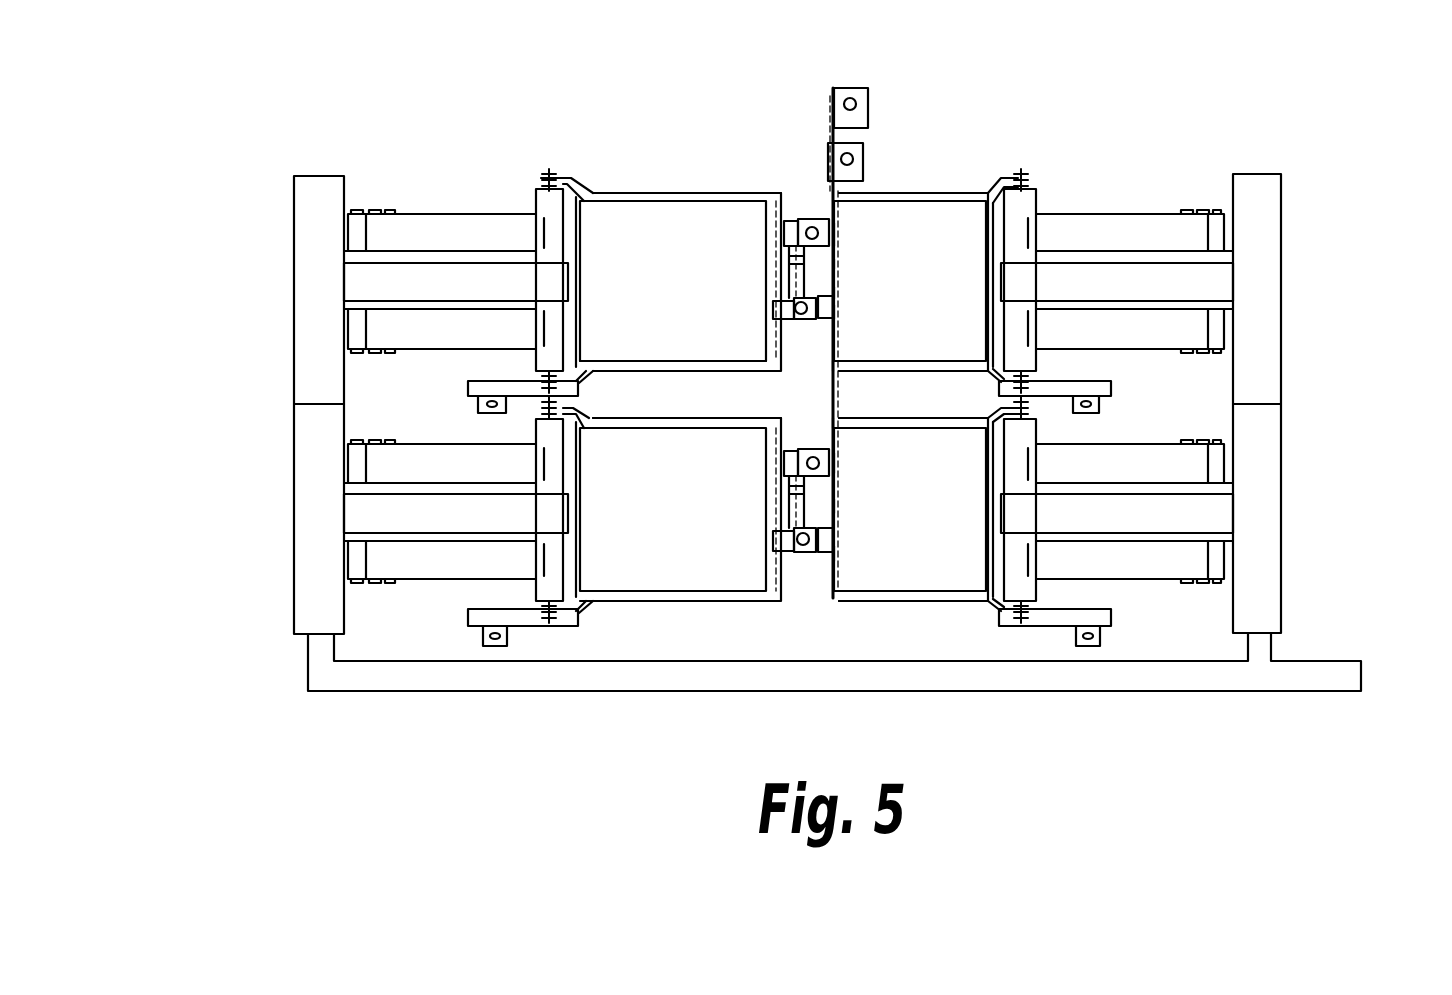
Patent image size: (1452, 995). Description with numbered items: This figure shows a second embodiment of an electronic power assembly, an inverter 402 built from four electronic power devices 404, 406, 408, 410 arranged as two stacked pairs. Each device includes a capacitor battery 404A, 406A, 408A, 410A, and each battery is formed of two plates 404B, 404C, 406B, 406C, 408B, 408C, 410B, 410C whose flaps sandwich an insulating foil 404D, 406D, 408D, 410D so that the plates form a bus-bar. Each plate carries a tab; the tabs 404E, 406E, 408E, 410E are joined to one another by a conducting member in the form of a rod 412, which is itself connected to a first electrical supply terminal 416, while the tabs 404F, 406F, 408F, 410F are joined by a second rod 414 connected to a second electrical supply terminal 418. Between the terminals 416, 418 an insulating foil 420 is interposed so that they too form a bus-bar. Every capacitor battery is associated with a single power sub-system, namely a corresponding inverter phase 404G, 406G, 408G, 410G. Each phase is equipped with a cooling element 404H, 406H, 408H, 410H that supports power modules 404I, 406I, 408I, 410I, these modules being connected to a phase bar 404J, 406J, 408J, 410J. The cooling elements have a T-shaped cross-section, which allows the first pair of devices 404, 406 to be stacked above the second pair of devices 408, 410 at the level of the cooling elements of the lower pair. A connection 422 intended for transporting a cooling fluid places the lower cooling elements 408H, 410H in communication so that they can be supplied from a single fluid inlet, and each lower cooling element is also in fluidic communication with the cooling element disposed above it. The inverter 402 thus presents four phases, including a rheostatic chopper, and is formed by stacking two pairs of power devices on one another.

The inverter 402 is at (950, 98).
The electronic power device 404 is at (620, 142).
The capacitor battery 404A is at (658, 225).
The plate 404B is at (640, 190).
The plate 404C is at (645, 360).
The insulating foil 404D is at (775, 275).
The tab 404E is at (783, 232).
The tab 404F is at (777, 311).
The inverter phase 404G is at (283, 198).
The cooling element 404H is at (330, 287).
The power modules 404I is at (455, 320).
The phase bar 404J is at (472, 380).
The electronic power device 406 is at (1137, 162).
The capacitor battery 406A is at (927, 225).
The plate 406B is at (900, 195).
The plate 406C is at (882, 365).
The insulating foil 406D is at (833, 262).
The tab 406E is at (840, 224).
The tab 406F is at (835, 310).
The inverter phase 406G is at (1300, 238).
The cooling element 406H is at (1268, 288).
The power modules 406I is at (1148, 320).
The phase bar 406J is at (1103, 383).
The electronic power device 408 is at (630, 628).
The capacitor battery 408A is at (673, 567).
The plate 408B is at (655, 420).
The plate 408C is at (717, 600).
The insulating foil 408D is at (775, 504).
The tab 408E is at (788, 462).
The tab 408F is at (778, 540).
The inverter phase 408G is at (283, 508).
The cooling element 408H is at (320, 500).
The power modules 408I is at (437, 555).
The phase bar 408J is at (510, 617).
The electronic power device 410 is at (952, 622).
The capacitor battery 410A is at (945, 580).
The plate 410B is at (893, 422).
The plate 410C is at (898, 600).
The insulating foil 410D is at (840, 505).
The tab 410E is at (840, 462).
The tab 410F is at (838, 553).
The inverter phase 410G is at (1292, 530).
The cooling element 410H is at (1258, 505).
The power modules 410I is at (1135, 555).
The phase bar 410J is at (1103, 618).
The rod 412 is at (830, 388).
The second rod 414 is at (835, 292).
The first electrical supply terminal 416 is at (827, 165).
The second electrical supply terminal 418 is at (833, 95).
The insulating foil 420 is at (834, 405).
The connection 422 is at (1302, 677).